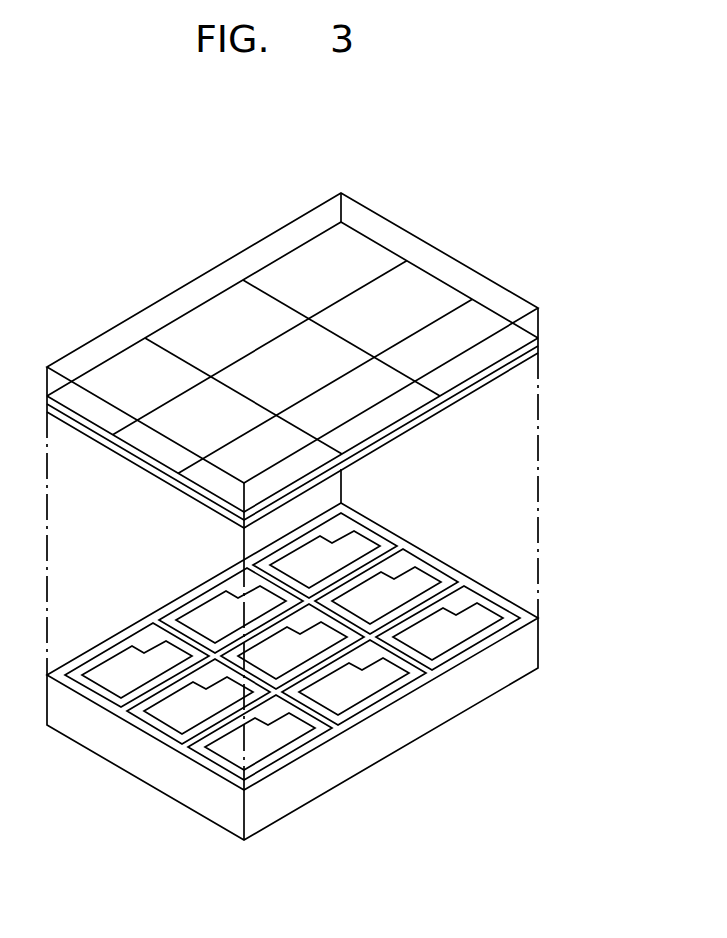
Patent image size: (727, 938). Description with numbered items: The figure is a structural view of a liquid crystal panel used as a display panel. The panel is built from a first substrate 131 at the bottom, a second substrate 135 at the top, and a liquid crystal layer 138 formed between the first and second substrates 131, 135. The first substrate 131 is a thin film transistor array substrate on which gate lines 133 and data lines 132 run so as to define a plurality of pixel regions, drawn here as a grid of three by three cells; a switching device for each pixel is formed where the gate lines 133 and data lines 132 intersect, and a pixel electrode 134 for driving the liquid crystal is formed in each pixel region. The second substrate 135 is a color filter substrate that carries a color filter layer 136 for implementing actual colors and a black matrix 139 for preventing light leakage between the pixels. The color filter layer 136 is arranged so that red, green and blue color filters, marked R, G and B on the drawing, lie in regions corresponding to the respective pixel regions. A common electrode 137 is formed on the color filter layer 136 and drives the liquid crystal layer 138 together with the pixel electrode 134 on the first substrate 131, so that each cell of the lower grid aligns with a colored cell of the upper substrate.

The first substrate 131 is at (530, 650).
The data lines 132 is at (425, 620).
The gate lines 133 is at (443, 672).
The pixel electrode 134 is at (275, 752).
The second substrate 135 is at (530, 322).
The color filter layer 136 is at (537, 344).
The common electrode 137 is at (533, 360).
The liquid crystal layer 138 is at (532, 497).
The black matrix 139 is at (370, 282).